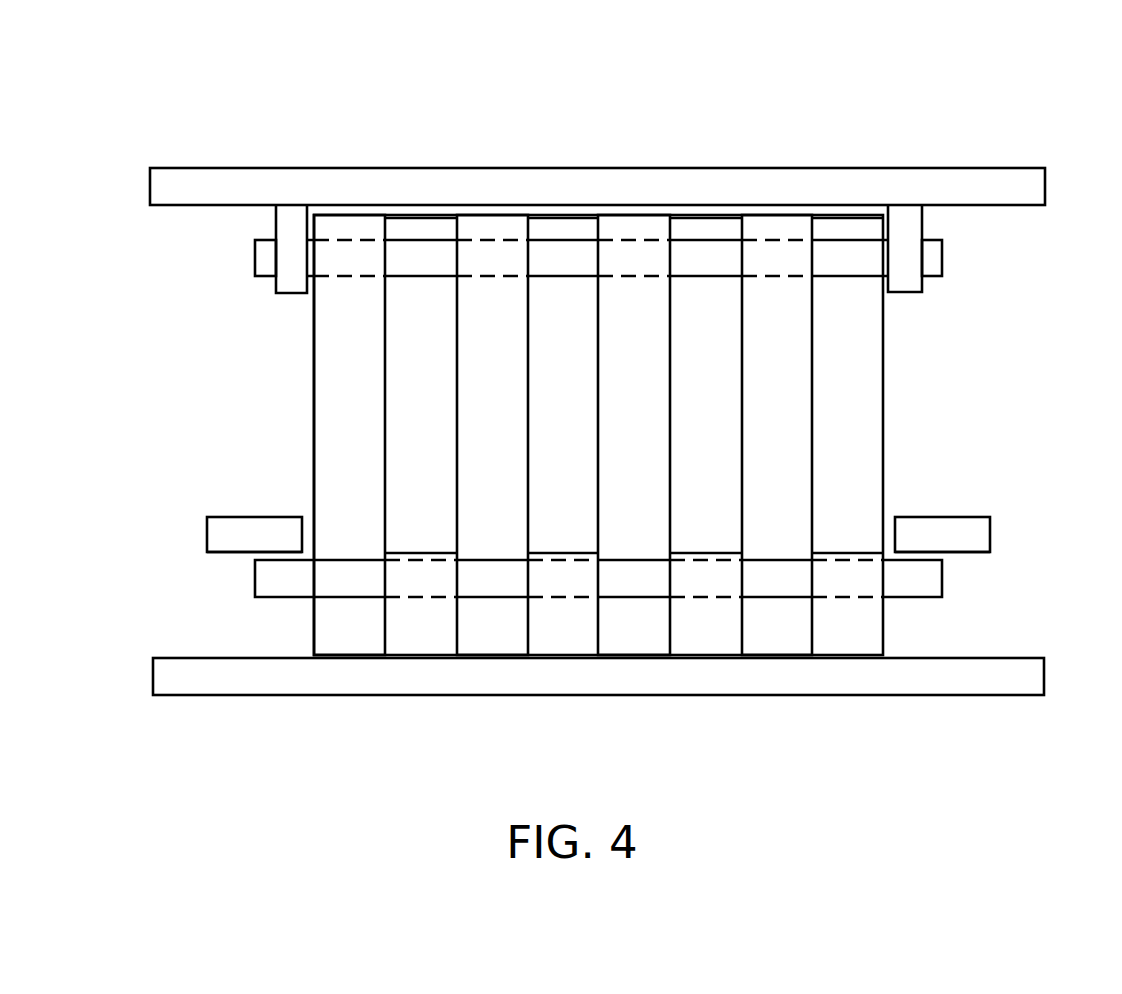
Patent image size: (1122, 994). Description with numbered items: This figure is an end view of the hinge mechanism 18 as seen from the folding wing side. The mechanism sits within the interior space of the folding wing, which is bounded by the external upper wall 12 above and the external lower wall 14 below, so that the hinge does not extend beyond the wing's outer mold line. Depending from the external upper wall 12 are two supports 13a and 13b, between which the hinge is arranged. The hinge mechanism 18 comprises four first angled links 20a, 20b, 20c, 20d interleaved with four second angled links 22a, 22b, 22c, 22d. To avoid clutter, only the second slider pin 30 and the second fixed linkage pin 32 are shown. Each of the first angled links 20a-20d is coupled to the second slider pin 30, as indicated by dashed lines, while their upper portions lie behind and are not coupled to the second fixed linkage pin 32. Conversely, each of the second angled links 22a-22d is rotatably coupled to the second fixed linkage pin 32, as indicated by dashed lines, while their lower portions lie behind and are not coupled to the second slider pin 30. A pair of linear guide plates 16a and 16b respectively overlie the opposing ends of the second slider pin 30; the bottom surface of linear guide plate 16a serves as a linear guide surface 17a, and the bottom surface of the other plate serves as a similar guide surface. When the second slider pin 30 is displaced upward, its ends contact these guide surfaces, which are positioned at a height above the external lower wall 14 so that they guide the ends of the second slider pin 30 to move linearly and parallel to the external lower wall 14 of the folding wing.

The external upper wall 12 is at (893, 168).
The first leg 13a is at (275, 284).
The second leg 13b is at (923, 290).
The external lower wall 14 is at (980, 657).
The linear guide plate 16a is at (255, 517).
The linear guide plate 16b is at (940, 514).
The linear guide surface 17a is at (238, 553).
The hinge mechanism 18 is at (928, 415).
The first angled link 20a is at (423, 655).
The first angled link 20b is at (562, 657).
The first angled link 20c is at (695, 658).
The first angled link 20d is at (848, 657).
The second angled link 22a is at (348, 214).
The second angled link 22b is at (491, 214).
The second angled link 22c is at (634, 214).
The second angled link 22d is at (783, 214).
The second slider pin 30 is at (253, 583).
The second fixed linkage pin 32 is at (255, 263).